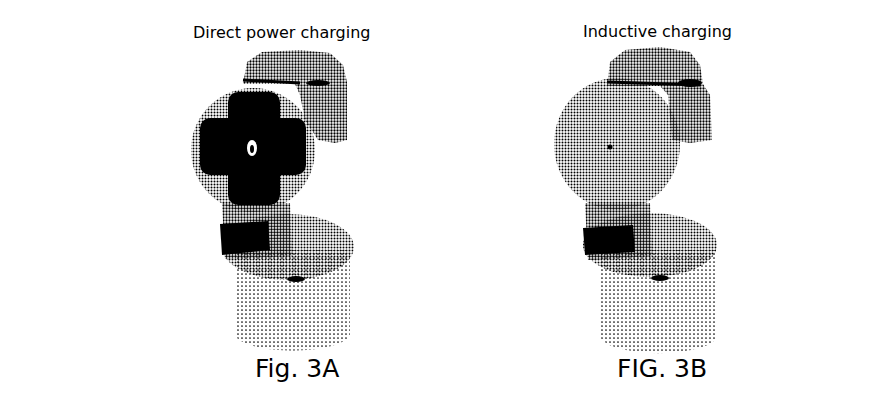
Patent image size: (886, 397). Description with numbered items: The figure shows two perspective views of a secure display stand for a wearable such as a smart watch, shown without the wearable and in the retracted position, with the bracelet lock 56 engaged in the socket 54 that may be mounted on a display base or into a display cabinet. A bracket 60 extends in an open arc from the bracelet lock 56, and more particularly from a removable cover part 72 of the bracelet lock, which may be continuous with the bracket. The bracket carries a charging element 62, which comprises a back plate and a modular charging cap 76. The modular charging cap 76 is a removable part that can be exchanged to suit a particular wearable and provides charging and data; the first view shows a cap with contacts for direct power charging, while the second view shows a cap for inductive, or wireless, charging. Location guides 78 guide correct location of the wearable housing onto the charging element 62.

In FIG. 3A, the socket 54 is at (338, 330).
In FIG. 3B, the socket 54 is at (632, 323).
In FIG. 3A, the bracelet lock 56 is at (330, 283).
In FIG. 3B, the bracelet lock 56 is at (620, 292).
In FIG. 3A, the bracket 60 is at (267, 247).
In FIG. 3B, the bracket 60 is at (588, 230).
In FIG. 3A, the charging element 62 is at (341, 216).
In FIG. 3B, the charging element 62 is at (630, 217).
In FIG. 3B, the removable cover part 72 is at (690, 233).
In FIG. 3A, the modular charging cap 76 is at (195, 140).
In FIG. 3B, the modular charging cap 76 is at (650, 167).
In FIG. 3A, the location guides 78 is at (242, 78).
In FIG. 3B, the location guides 78 is at (650, 87).